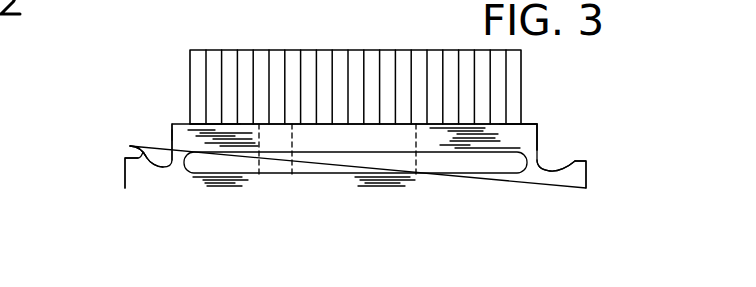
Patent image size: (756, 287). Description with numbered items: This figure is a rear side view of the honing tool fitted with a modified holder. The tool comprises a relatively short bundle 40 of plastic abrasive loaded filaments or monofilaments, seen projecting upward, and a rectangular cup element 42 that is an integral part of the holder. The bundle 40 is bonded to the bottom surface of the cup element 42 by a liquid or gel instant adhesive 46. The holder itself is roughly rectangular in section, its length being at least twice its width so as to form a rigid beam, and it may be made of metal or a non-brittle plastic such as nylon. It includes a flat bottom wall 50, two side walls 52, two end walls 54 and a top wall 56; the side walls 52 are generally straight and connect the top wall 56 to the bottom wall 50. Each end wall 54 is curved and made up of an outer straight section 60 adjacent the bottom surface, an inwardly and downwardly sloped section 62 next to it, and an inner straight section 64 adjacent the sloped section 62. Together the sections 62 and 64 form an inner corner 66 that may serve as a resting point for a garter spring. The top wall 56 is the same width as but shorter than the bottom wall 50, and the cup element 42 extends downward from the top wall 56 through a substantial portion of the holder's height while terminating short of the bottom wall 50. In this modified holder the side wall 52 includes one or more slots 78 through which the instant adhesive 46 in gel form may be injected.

The bundle 40 is at (322, 50).
The cup element 42 is at (213, 124).
The instant adhesive 46 is at (525, 140).
The bottom wall 50 is at (340, 192).
The side wall 52 is at (178, 178).
The end wall 54 is at (165, 137).
The top wall 56 is at (529, 124).
The outer straight section 60 is at (126, 172).
The inwardly and downwardly sloped section 62 is at (133, 147).
The inner straight section 64 is at (172, 128).
The inner corner 66 is at (135, 148).
The slot 78 is at (307, 163).